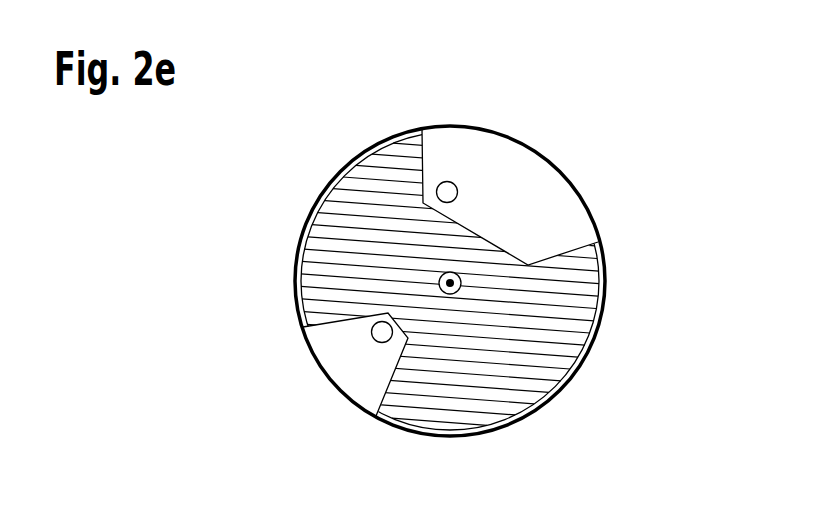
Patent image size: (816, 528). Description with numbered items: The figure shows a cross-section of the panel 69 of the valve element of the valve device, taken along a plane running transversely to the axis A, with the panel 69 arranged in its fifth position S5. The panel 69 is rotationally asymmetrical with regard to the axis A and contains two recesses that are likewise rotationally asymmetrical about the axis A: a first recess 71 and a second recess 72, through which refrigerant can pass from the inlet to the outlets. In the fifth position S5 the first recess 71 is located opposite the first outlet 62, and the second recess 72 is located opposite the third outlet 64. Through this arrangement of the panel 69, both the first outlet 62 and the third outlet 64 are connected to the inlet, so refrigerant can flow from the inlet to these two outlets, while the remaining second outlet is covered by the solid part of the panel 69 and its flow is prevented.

The panel 69 is at (580, 320).
The first recess 71 is at (505, 183).
The second recess 72 is at (375, 376).
The first outlet 62 is at (445, 188).
The third outlet 64 is at (380, 332).
The axis A is at (452, 282).
The fifth position S5 is at (278, 294).